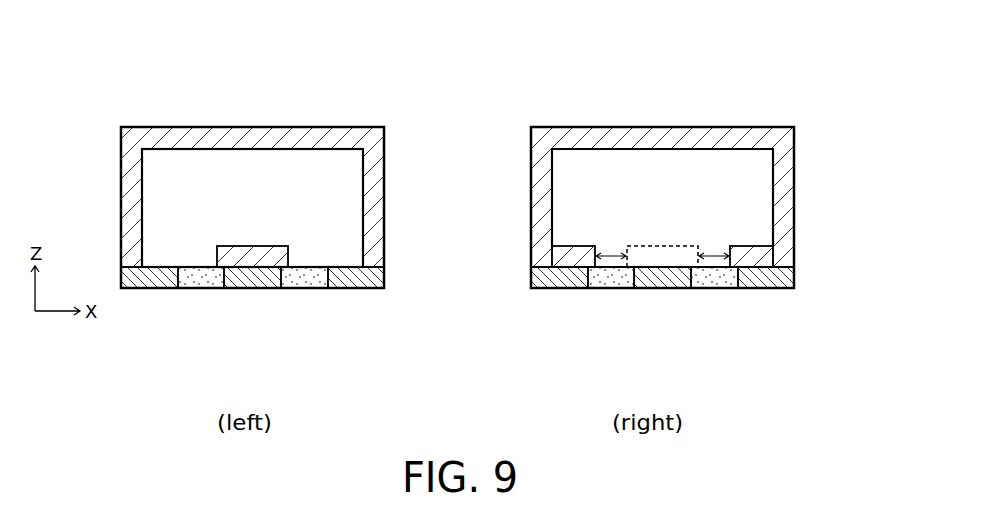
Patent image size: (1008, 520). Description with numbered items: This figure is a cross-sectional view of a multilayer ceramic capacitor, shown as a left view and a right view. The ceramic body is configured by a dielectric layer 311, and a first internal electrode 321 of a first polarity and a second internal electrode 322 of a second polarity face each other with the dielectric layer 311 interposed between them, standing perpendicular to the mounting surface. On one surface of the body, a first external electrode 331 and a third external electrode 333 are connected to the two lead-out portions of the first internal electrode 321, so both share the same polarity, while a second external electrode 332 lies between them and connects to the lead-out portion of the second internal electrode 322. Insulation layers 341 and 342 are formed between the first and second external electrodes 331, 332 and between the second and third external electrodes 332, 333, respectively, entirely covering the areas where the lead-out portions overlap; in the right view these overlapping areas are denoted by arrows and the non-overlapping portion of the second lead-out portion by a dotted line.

The dielectric layer 311 is at (315, 130).
The first internal electrode 321 is at (352, 189).
The second internal electrode 322 is at (762, 189).
The first external electrode 331 is at (145, 288).
The insulation layer 341 is at (198, 288).
The second external electrode 332 is at (247, 288).
The insulation layer 342 is at (308, 288).
The third external electrode 333 is at (360, 288).